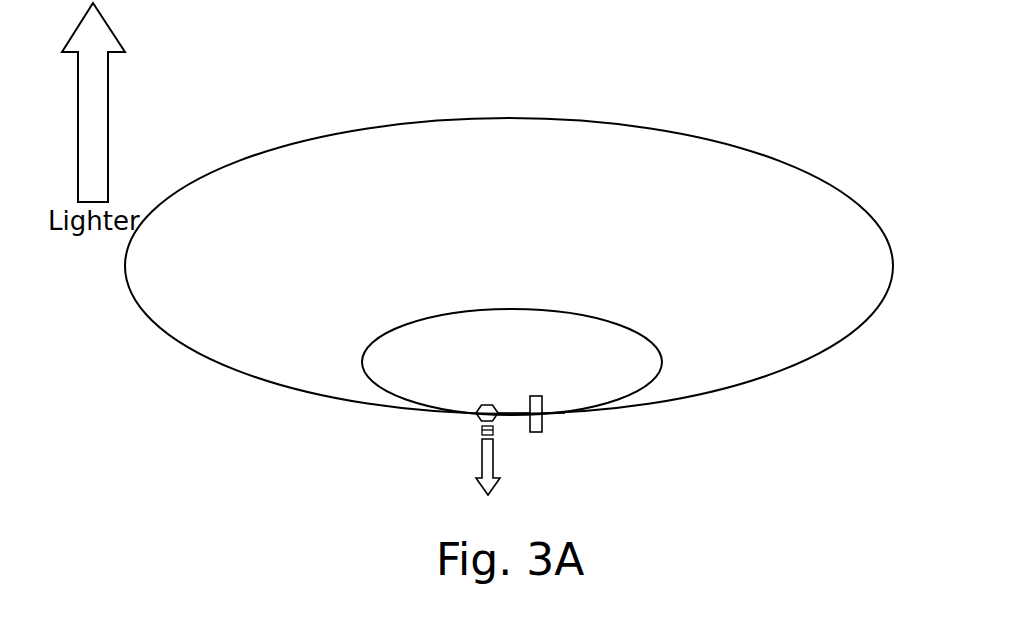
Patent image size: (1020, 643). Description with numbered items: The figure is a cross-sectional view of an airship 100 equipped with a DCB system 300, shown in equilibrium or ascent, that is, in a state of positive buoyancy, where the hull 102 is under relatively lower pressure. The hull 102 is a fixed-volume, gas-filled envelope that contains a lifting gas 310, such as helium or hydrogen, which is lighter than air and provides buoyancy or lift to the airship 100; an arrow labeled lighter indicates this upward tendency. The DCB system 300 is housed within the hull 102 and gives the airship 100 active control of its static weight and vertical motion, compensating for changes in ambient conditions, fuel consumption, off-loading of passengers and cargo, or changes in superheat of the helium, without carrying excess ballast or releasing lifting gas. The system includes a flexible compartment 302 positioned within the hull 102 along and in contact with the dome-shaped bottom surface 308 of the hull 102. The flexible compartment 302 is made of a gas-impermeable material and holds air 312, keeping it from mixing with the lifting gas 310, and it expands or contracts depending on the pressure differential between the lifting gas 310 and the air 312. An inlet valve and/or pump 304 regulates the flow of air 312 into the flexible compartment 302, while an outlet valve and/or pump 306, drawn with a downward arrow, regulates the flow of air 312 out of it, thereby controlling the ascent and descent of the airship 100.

The airship 100 is at (416, 76).
The hull 102 is at (789, 164).
The DCB system 300 is at (378, 297).
The flexible compartment 302 is at (622, 323).
The inlet valve and/or pump 304 is at (543, 429).
The outlet valve and/or pump 306 is at (478, 421).
The bottom surface 308 is at (548, 412).
The lifting gas 310 is at (533, 213).
The air 312 is at (533, 354).